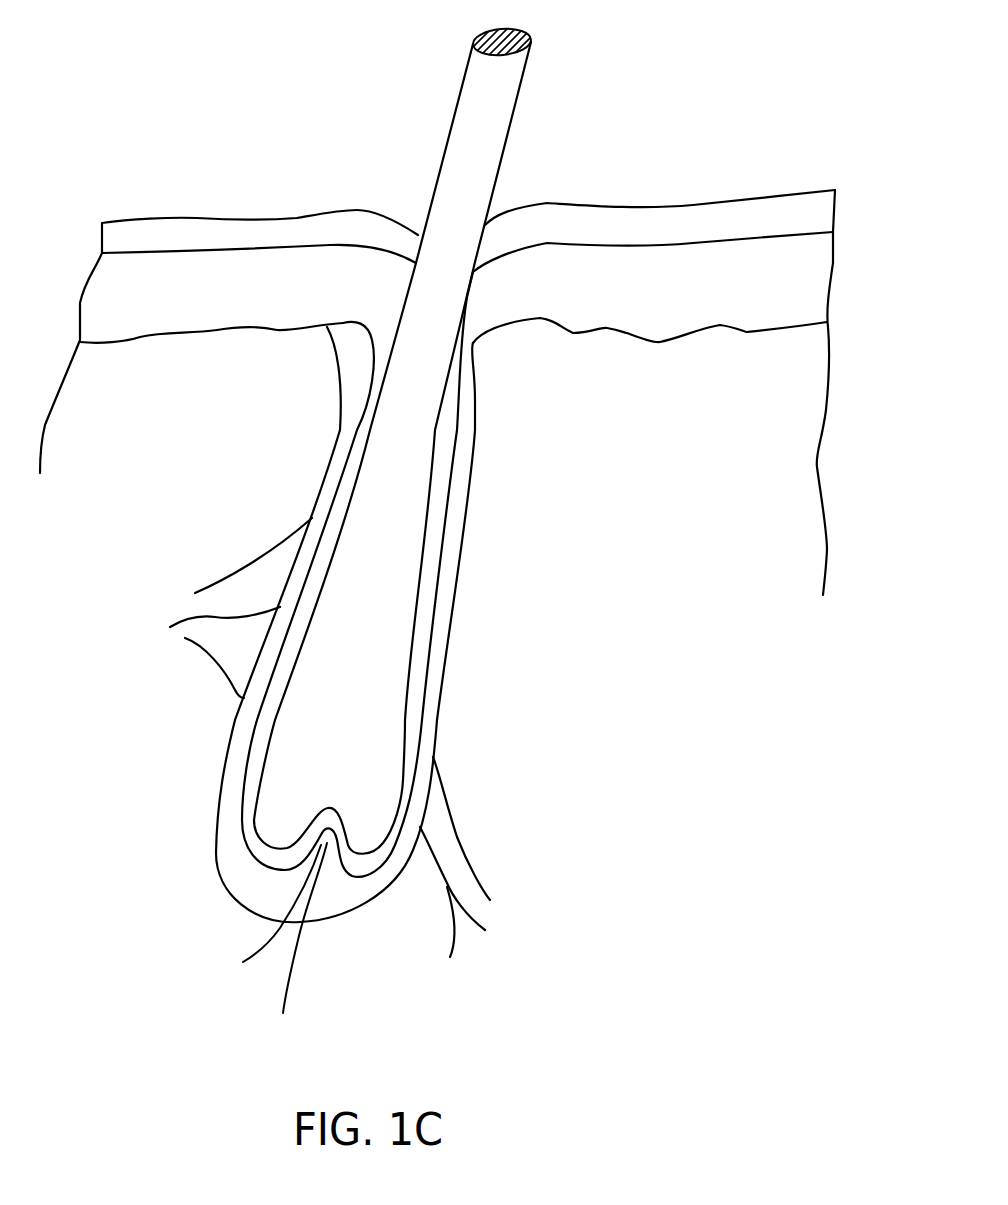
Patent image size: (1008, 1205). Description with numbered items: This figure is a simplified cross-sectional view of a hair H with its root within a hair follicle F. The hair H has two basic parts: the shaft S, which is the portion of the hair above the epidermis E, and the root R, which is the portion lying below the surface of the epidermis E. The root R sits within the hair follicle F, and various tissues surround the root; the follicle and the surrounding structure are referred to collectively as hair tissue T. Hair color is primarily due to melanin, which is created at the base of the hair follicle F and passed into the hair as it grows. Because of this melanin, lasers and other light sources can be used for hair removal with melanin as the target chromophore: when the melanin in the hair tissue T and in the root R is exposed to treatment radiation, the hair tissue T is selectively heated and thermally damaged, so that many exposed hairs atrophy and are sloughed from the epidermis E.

The hair H is at (465, 517).
The shaft S is at (473, 122).
The epidermis E is at (855, 185).
The hair follicle F is at (423, 583).
The root R is at (382, 647).
The hair tissue T is at (572, 695).